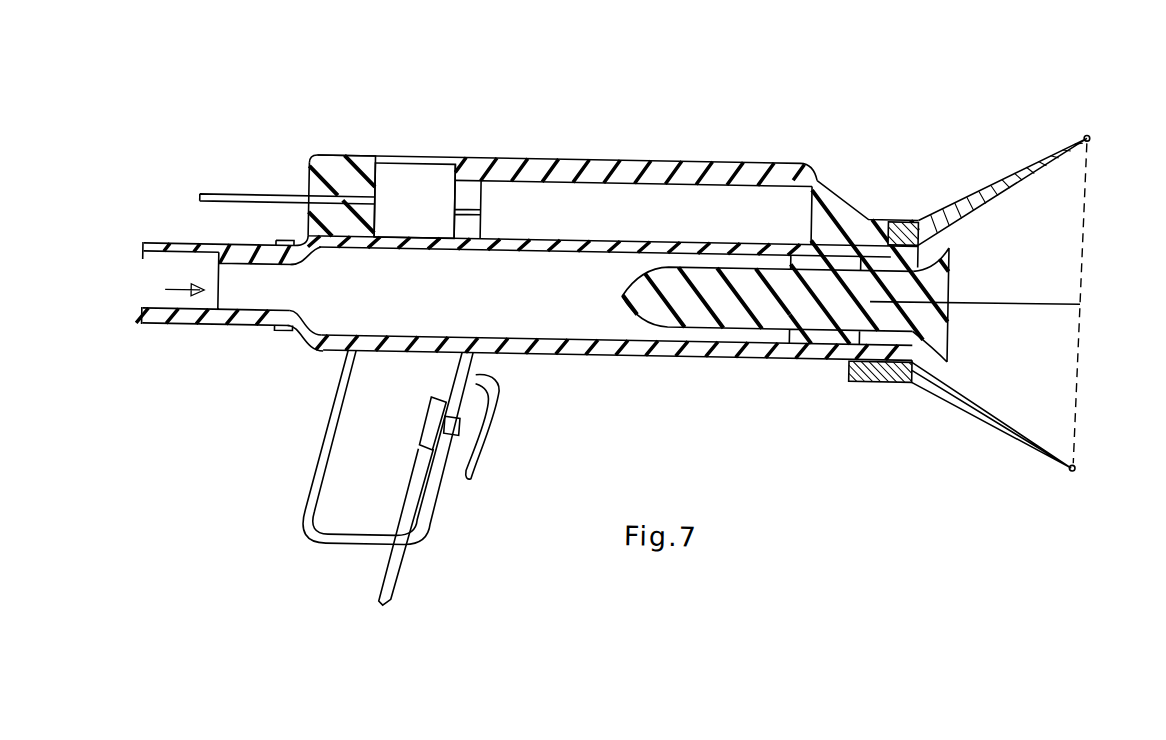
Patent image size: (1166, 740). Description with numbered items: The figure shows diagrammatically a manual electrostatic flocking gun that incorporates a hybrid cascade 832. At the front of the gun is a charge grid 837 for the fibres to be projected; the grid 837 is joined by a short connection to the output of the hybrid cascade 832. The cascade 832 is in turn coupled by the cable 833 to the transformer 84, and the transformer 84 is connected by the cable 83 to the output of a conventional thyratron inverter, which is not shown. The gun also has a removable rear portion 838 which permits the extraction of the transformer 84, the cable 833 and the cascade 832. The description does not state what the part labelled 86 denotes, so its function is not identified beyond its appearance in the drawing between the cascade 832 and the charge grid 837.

The cable 83 is at (238, 194).
The removable rear portion 838 is at (358, 160).
The transformer 84 is at (410, 176).
The cable 833 is at (464, 197).
The hybrid cascade 832 is at (621, 195).
The nozzle holder 86 is at (843, 188).
The charge grid 837 is at (1080, 284).